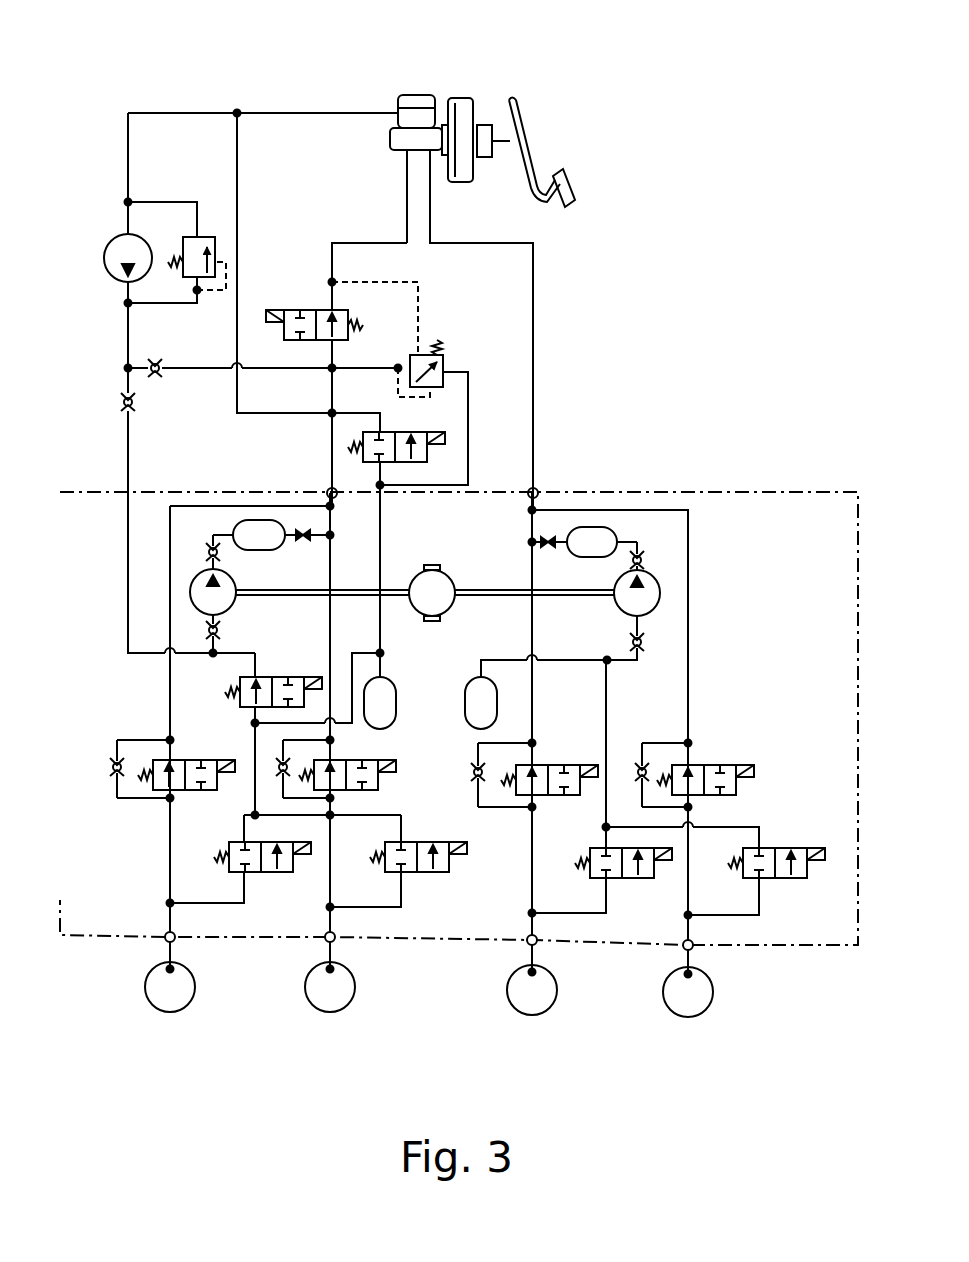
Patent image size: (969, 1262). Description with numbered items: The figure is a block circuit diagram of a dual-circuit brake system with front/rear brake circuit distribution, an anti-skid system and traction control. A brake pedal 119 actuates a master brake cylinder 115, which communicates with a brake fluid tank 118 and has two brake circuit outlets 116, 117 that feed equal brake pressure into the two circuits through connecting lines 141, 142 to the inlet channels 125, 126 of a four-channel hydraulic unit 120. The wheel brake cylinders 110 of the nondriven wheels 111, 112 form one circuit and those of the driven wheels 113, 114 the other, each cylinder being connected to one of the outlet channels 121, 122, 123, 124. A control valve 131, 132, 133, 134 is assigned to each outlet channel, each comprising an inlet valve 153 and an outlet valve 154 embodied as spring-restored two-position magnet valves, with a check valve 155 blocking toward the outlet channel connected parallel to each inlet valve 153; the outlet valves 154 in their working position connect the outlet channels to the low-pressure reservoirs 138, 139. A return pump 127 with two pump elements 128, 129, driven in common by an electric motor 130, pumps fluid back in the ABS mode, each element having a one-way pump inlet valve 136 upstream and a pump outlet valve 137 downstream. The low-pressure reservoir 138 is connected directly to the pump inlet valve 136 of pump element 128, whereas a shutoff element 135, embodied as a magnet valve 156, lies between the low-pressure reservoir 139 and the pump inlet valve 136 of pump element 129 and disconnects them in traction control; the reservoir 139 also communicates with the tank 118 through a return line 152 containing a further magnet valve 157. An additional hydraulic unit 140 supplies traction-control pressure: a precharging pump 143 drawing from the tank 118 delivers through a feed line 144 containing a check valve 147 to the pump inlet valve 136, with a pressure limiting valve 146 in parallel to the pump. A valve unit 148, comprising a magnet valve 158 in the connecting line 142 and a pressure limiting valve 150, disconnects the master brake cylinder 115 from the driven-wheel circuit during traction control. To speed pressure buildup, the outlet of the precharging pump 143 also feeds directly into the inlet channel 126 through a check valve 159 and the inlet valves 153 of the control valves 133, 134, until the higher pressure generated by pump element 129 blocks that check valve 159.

The wheel brake cylinder 110 is at (178, 969).
The nondriven wheel 111 is at (534, 1015).
The nondriven wheel 112 is at (692, 1017).
The driven wheel 113 is at (172, 1012).
The driven wheel 114 is at (332, 1012).
The master brake cylinder 115 is at (390, 140).
The brake circuit outlet 116 is at (443, 158).
The brake circuit outlet 117 is at (405, 155).
The brake fluid tank 118 is at (432, 100).
The brake pedal 119 is at (527, 185).
The four-channel hydraulic unit 120 is at (790, 489).
The outlet channel 121 is at (538, 940).
The outlet channel 122 is at (694, 945).
The outlet channel 123 is at (176, 936).
The outlet channel 124 is at (336, 936).
The inlet channel 125 is at (540, 489).
The inlet channel 126 is at (325, 489).
The return pump 127 is at (415, 575).
The pump element 128 is at (660, 594).
The pump element 129 is at (236, 600).
The electric motor 130 is at (452, 576).
The control valve 131 is at (556, 760).
The control valve 132 is at (778, 808).
The control valve 133 is at (188, 845).
The control valve 134 is at (400, 802).
The shutoff element 135 is at (232, 710).
The pump inlet valve 136 is at (200, 630).
The pump outlet valve 137 is at (200, 554).
The low-pressure reservoir 138 is at (468, 705).
The low-pressure reservoir 139 is at (382, 700).
The additional hydraulic unit 140 is at (207, 140).
The connecting line 141 is at (433, 232).
The connecting line 142 is at (400, 238).
The precharging pump 143 is at (135, 248).
The feed line 144 is at (125, 458).
The pressure limiting valve 146 is at (205, 235).
The check valve 147 is at (136, 412).
The valve unit 148 is at (400, 332).
The pressure limiting valve 150 is at (447, 368).
The return line 152 is at (237, 300).
The inlet valve 153 is at (212, 790).
The outlet valve 154 is at (256, 875).
The check valve 155 is at (113, 778).
The 2/2-way magnet valve 156 is at (283, 677).
The 2/2-way magnet valve 157 is at (400, 432).
The 2/2-way magnet valve 158 is at (322, 345).
The check valve 159 is at (160, 362).